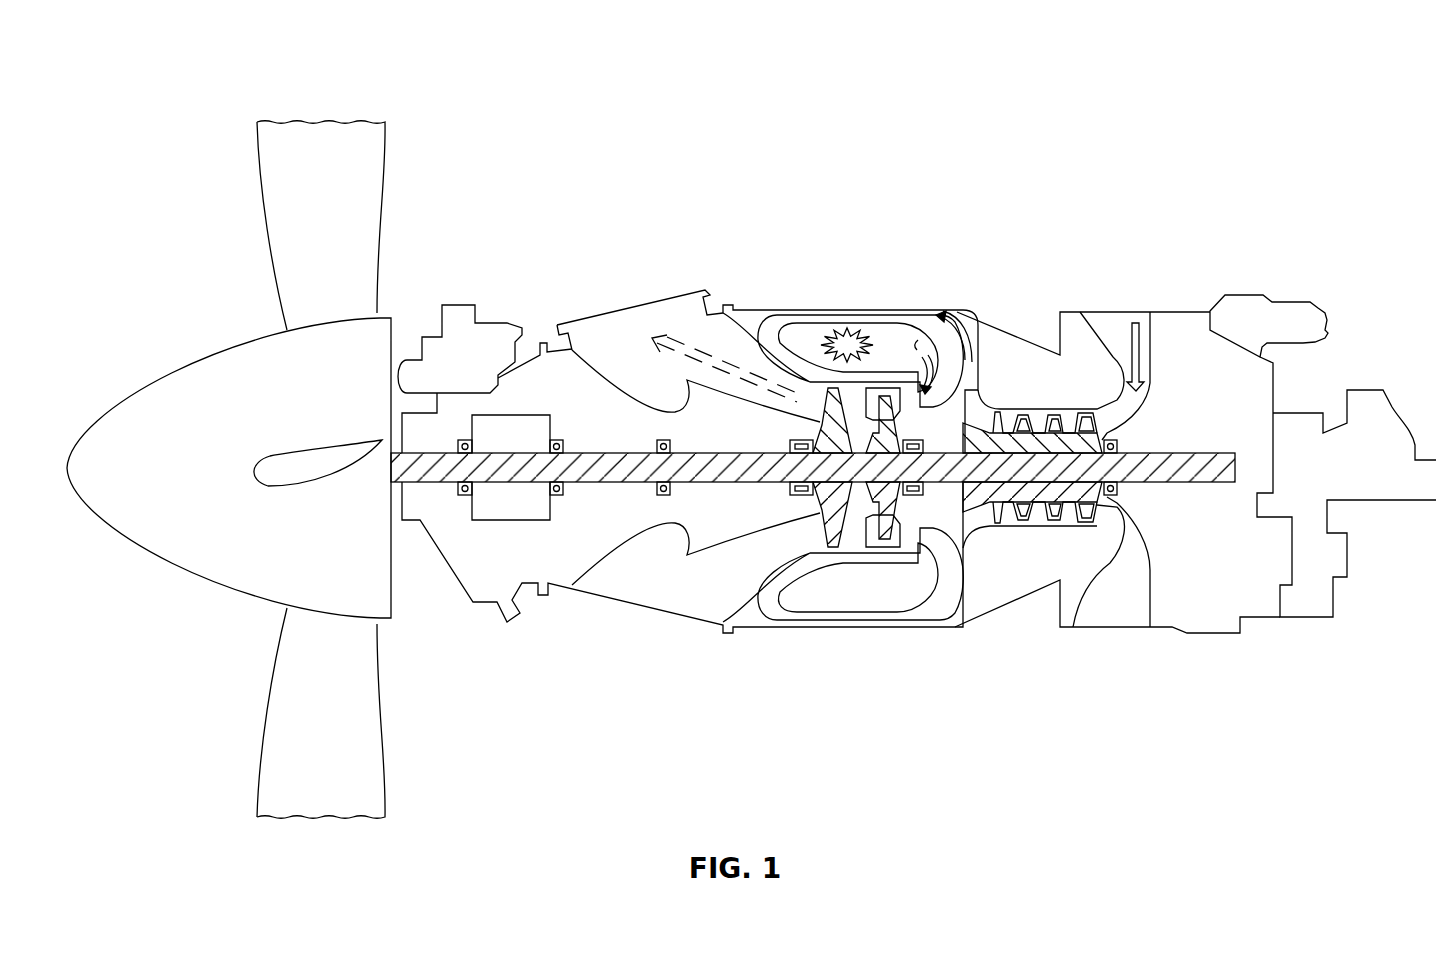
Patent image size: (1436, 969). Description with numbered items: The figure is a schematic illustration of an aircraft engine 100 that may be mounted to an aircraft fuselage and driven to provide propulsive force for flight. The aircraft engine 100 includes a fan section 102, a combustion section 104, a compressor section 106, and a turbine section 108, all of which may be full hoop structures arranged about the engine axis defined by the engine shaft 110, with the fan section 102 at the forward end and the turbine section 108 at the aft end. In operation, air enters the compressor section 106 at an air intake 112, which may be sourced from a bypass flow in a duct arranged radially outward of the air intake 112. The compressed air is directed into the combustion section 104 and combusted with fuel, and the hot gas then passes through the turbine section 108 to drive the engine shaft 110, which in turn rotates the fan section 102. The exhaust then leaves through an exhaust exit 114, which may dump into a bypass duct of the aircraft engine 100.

The aircraft engine 100 is at (1253, 123).
The fan section 102 is at (354, 122).
The combustion section 104 is at (890, 305).
The compressor section 106 is at (1128, 494).
The turbine section 108 is at (913, 500).
The engine shaft 110 is at (618, 478).
The air intake 112 is at (1134, 310).
The exhaust exit 114 is at (631, 306).